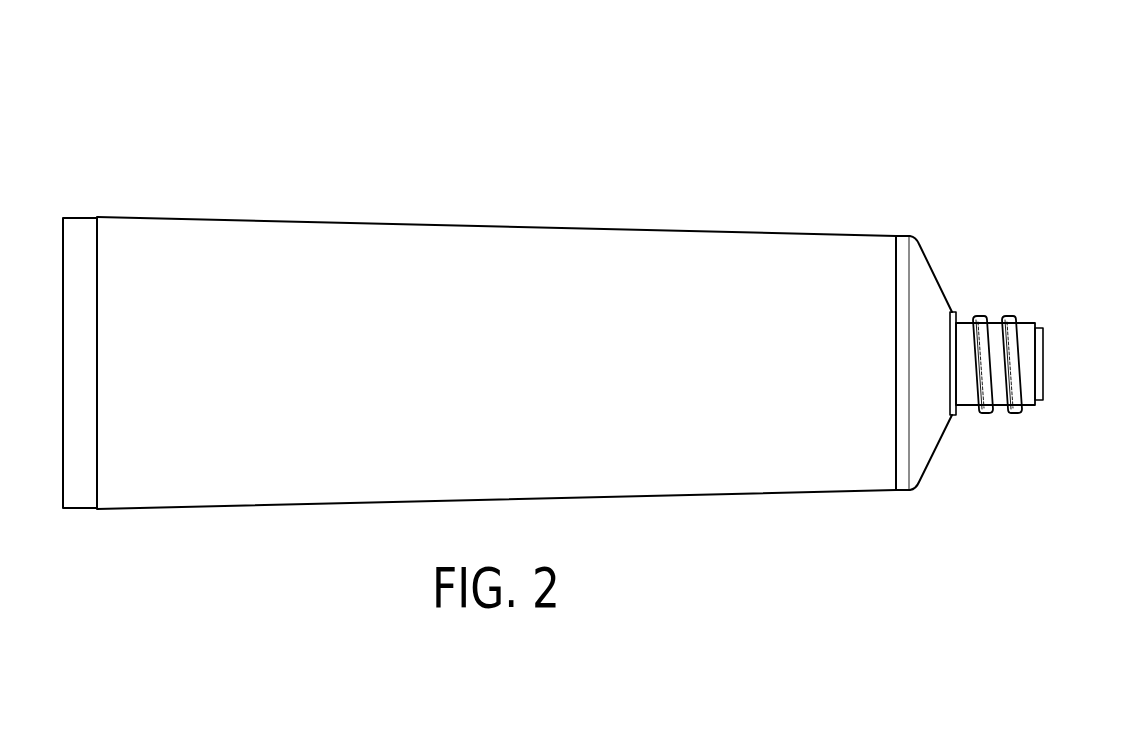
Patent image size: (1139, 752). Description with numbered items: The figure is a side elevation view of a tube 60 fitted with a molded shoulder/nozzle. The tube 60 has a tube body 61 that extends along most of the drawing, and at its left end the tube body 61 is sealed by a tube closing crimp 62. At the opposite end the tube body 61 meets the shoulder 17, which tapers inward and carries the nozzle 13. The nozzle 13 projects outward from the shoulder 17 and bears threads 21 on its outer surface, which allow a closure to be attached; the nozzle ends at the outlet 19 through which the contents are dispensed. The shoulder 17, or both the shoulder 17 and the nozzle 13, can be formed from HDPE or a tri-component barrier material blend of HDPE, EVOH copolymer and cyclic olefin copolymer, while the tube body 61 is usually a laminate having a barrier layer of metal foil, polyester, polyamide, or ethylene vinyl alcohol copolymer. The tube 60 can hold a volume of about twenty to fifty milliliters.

The nozzle 13 is at (967, 405).
The shoulder 17 is at (931, 263).
The outlet opening 19 is at (1042, 360).
The threads 21 is at (1016, 319).
The tube 60 is at (557, 373).
The tube body 61 is at (426, 252).
The tube closing crimp 62 is at (78, 217).